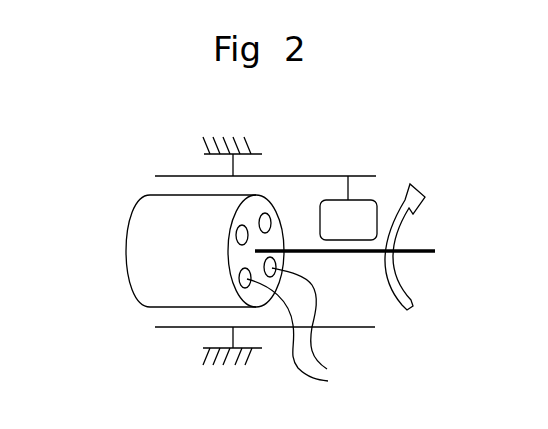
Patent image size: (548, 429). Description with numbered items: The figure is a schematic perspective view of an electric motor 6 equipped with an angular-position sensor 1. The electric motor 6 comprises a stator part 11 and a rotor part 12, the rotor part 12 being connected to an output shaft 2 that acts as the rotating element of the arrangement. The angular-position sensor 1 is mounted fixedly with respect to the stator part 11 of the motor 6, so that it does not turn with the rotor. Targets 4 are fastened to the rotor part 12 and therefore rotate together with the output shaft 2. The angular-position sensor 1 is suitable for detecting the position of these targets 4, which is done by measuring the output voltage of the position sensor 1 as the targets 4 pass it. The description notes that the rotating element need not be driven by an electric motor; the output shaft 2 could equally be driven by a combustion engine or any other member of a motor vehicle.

The electric motor 6 is at (111, 194).
The stator part 11 is at (316, 176).
The angular-position sensor 1 is at (352, 218).
The rotor part 12 is at (145, 285).
The output shaft 2 is at (362, 253).
The targets 4 is at (297, 333).